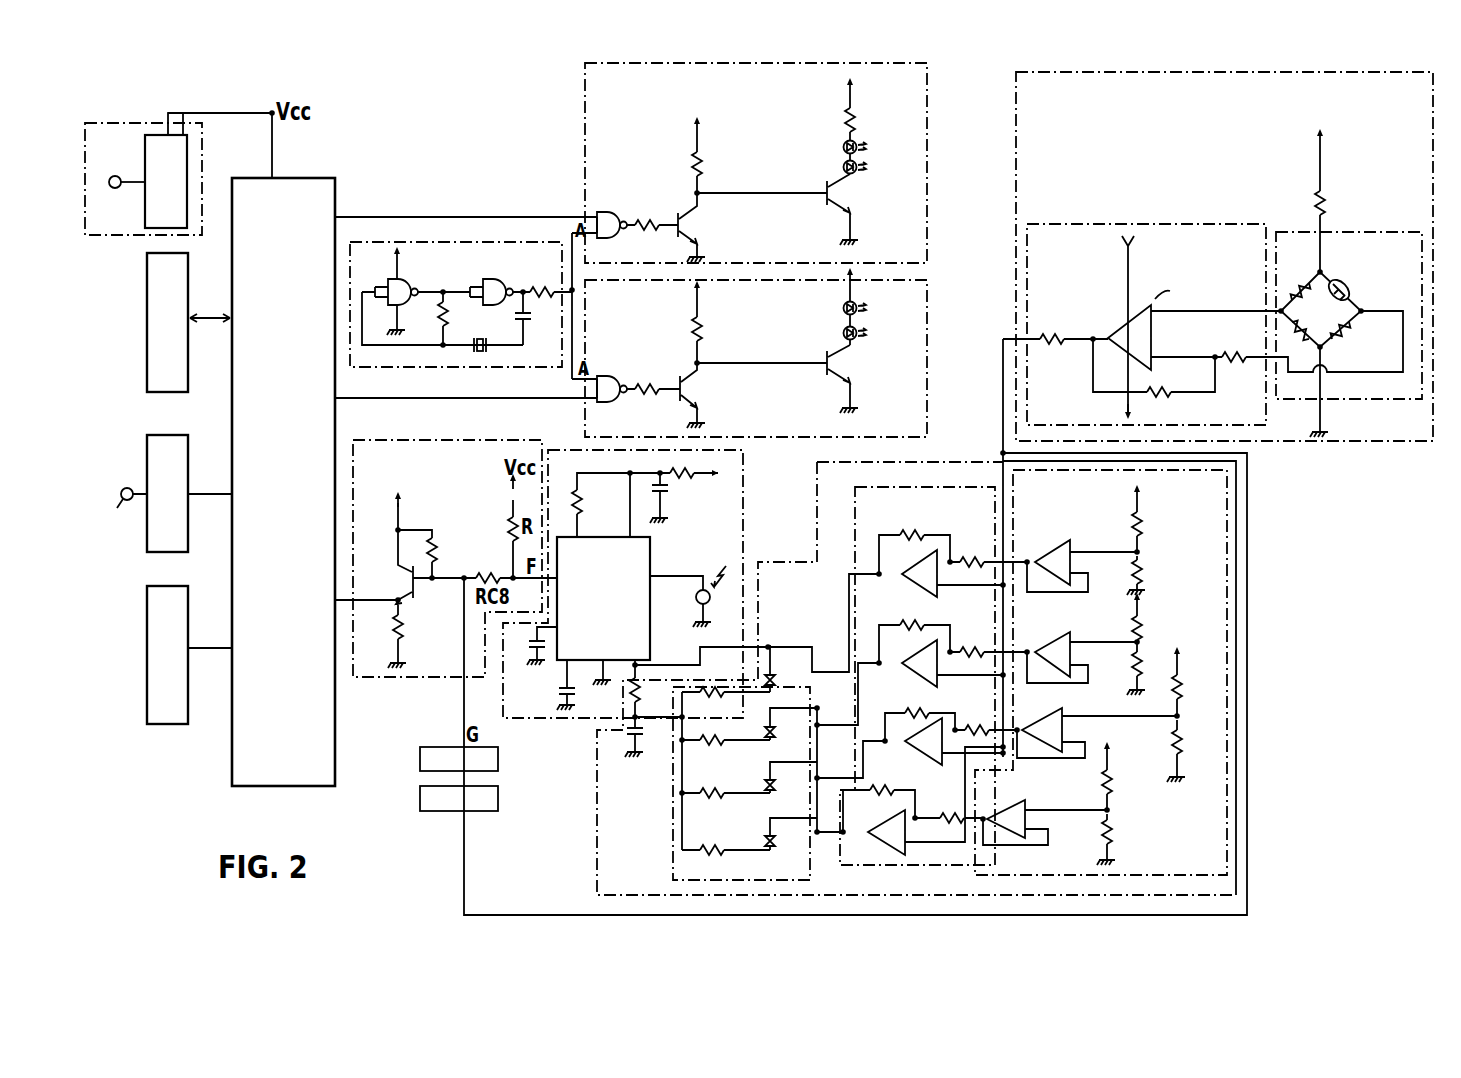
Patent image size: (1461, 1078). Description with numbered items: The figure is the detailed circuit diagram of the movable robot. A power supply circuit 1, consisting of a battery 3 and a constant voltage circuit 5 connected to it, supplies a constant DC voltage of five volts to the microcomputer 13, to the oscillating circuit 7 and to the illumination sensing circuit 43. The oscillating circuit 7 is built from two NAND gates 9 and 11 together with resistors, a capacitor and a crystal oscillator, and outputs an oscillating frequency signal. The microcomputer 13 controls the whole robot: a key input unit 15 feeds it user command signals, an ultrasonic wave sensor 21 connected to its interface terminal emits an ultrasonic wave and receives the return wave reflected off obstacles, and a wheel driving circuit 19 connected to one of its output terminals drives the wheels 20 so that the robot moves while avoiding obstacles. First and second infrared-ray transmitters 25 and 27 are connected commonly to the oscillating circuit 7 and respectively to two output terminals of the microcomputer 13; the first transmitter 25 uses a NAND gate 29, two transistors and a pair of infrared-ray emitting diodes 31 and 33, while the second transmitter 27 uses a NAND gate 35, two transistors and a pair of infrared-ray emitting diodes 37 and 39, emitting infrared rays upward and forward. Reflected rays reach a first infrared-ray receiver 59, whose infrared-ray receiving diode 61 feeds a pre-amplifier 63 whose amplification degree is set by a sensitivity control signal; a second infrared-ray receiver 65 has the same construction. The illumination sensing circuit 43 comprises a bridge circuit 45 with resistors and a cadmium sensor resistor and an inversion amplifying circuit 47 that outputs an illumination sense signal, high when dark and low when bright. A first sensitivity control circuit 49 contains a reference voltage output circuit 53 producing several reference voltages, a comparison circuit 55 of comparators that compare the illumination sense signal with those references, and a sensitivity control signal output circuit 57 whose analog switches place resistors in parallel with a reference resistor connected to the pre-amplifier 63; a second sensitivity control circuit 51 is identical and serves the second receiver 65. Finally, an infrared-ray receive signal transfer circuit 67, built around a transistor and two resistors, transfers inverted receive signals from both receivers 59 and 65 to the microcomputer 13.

The power supply circuit 1 is at (249, 144).
The battery 3 is at (114, 188).
The constant voltage circuit 5 is at (178, 120).
The oscillating circuit 7 is at (461, 268).
The NAND gate 9 is at (405, 285).
The NAND gate 11 is at (497, 280).
The microcomputer 13 is at (336, 178).
The key input unit 15 is at (147, 654).
The wheel driving circuit 19 is at (186, 441).
The wheels 20 is at (126, 517).
The ultrasonic wave sensor 21 is at (147, 300).
The first infrared-ray transmitter 25 is at (786, 160).
The second infrared-ray transmitter 27 is at (791, 346).
The NAND gate 29 is at (610, 212).
The infrared-ray emitting diode 31 is at (843, 144).
The infrared-ray emitting diode 33 is at (843, 167).
The NAND gate 35 is at (604, 375).
The infrared-ray emitting diode 37 is at (843, 308).
The infrared-ray emitting diode 39 is at (843, 333).
The illumination sensing circuit 43 is at (1218, 300).
The bridge circuit 45 is at (1400, 232).
The inversion amplifying circuit 47 is at (1216, 224).
The first sensitivity control circuit 49 is at (963, 678).
The second sensitivity control circuit 51 is at (419, 806).
The reference voltage output circuit 53 is at (1228, 637).
The comparison circuit 55 is at (855, 557).
The sensitivity control signal output circuit 57 is at (673, 850).
The first infrared-ray receiver 59 is at (650, 600).
The infrared-ray receiving diode 61 is at (695, 603).
The pre-amplifier 63 is at (652, 555).
The second infrared-ray receiver 65 is at (419, 762).
The infrared-ray receive signal transfer circuit 67 is at (383, 677).